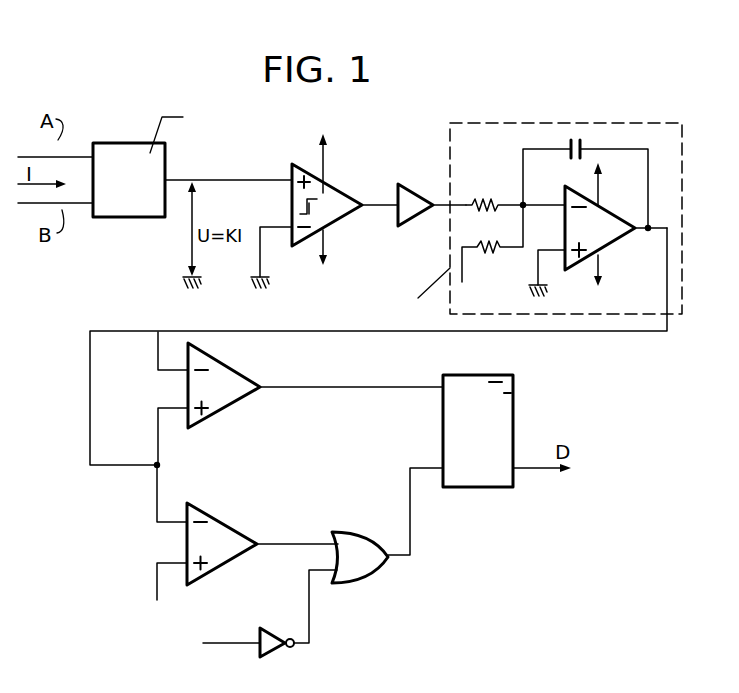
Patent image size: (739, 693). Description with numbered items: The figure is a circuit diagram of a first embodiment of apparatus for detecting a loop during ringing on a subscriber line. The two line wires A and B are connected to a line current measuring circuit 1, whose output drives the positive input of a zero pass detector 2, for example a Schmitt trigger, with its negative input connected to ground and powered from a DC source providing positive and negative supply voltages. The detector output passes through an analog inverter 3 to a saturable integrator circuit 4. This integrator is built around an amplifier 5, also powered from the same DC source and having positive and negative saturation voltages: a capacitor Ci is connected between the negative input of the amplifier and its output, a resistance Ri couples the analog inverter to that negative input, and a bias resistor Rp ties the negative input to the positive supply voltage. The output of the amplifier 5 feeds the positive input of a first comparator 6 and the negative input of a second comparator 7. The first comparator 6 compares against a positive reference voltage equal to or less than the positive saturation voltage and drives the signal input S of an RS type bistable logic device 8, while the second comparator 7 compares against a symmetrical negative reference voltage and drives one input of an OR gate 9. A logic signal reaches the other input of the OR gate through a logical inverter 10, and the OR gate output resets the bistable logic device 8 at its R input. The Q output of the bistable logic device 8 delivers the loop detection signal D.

The line current measuring circuit 1 is at (136, 157).
The zero pass detector 2 is at (342, 200).
The analog inverter 3 is at (421, 187).
The saturable integrator circuit 4 is at (625, 133).
The amplifier 5 is at (603, 225).
The first comparator 6 is at (222, 388).
The second comparator 7 is at (223, 543).
The RS type bistable logic device 8 is at (460, 429).
The OR gate 9 is at (360, 545).
The logical inverter 10 is at (268, 630).
The resistance Ri is at (495, 200).
The bias resistor Rp is at (490, 250).
The capacitor Ci is at (574, 140).